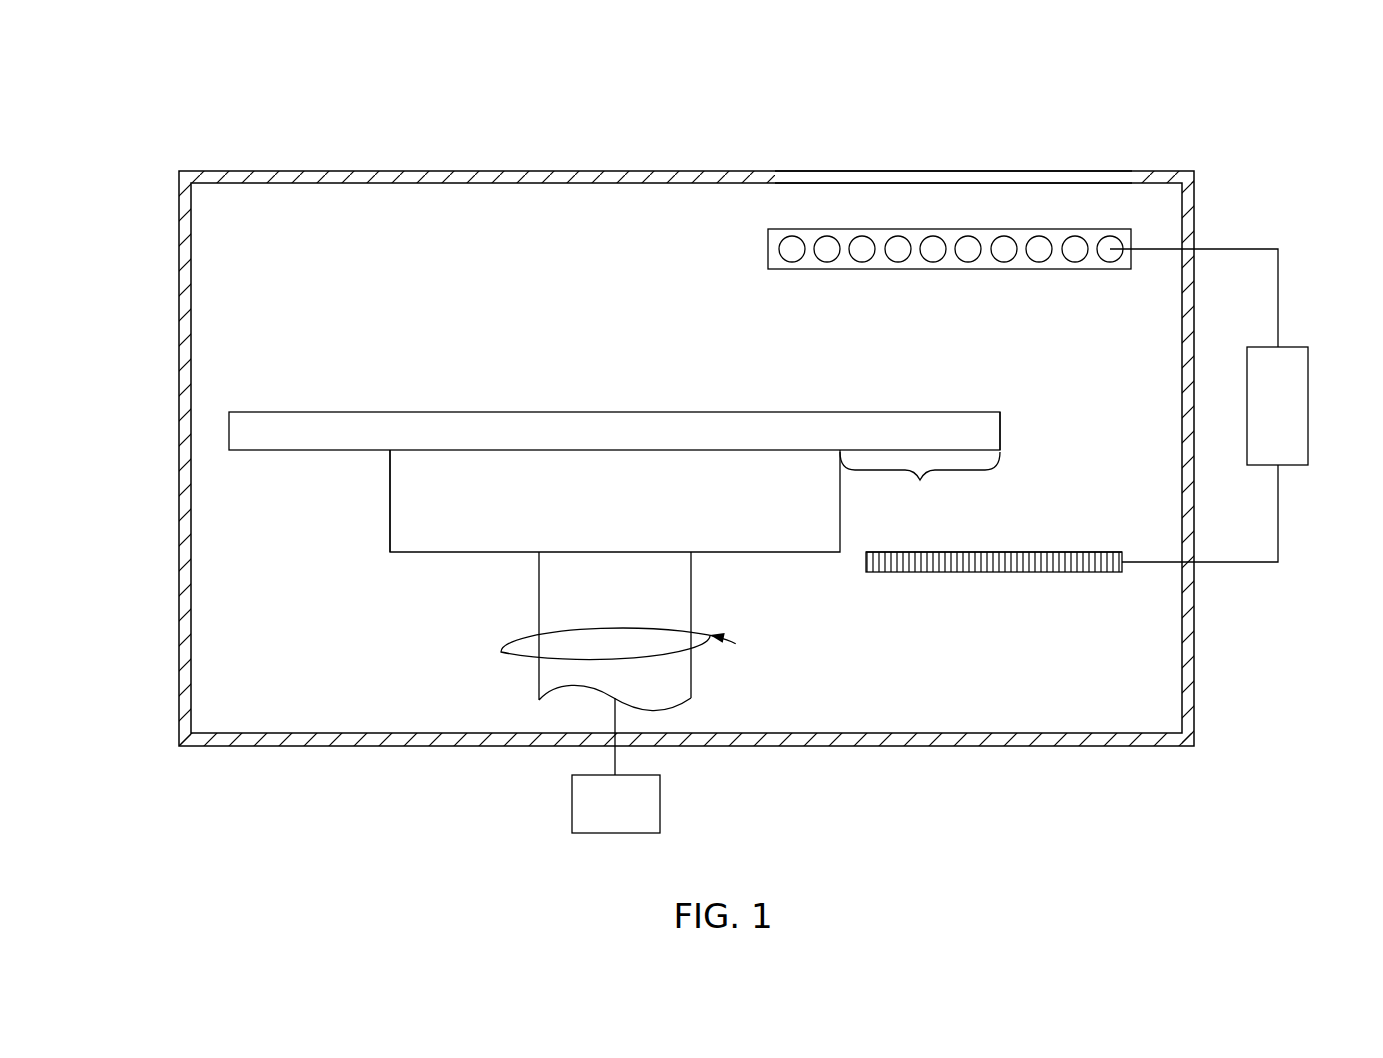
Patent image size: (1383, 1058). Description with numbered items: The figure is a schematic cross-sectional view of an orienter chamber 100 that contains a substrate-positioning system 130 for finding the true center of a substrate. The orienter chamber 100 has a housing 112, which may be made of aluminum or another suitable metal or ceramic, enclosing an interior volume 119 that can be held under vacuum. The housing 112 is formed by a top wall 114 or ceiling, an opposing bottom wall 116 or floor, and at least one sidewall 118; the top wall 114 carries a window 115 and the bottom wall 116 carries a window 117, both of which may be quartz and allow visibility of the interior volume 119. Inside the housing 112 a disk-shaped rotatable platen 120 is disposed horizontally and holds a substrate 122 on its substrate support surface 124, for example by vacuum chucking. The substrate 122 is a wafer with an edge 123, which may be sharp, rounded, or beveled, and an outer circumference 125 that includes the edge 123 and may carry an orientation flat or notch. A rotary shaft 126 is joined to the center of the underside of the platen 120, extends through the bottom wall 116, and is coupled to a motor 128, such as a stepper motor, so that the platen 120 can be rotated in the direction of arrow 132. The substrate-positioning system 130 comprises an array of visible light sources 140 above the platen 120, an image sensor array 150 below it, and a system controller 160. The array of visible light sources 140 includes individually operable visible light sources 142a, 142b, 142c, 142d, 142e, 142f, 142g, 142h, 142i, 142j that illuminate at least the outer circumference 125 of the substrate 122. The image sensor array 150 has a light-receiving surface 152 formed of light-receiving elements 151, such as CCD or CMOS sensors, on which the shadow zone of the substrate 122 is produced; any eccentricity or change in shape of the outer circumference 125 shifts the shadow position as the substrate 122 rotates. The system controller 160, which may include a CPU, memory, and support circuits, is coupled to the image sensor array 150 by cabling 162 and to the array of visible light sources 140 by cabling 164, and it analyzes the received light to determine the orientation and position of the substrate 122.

The orienter chamber 100 is at (171, 117).
The housing 112 is at (627, 462).
The top wall 114 is at (371, 171).
The window 115 is at (1092, 171).
The bottom wall 116 is at (415, 748).
The window 117 is at (972, 748).
The sidewall 118 is at (178, 580).
The interior volume 119 is at (240, 241).
The platen 120 is at (470, 553).
The substrate 122 is at (289, 412).
The edge 123 is at (1000, 430).
The substrate support surface 124 is at (413, 452).
The outer circumference 125 is at (920, 479).
The rotary shaft 126 is at (692, 600).
The motor 128 is at (597, 815).
The substrate-positioning system 130 is at (1235, 205).
The arrow 132 is at (507, 648).
The array of visible light sources 140 is at (788, 219).
The visible light source 142a is at (792, 262).
The visible light source 142b is at (827, 262).
The visible light source 142c is at (862, 236).
The visible light source 142d is at (898, 236).
The visible light source 142e is at (933, 262).
The visible light source 142f is at (968, 262).
The visible light source 142g is at (1004, 236).
The visible light source 142h is at (1039, 236).
The visible light source 142i is at (1075, 262).
The visible light source 142j is at (1110, 262).
The image sensor array 150 is at (966, 583).
The light-receiving elements 151 is at (1048, 572).
The light-receiving surface 152 is at (1018, 552).
The system controller 160 is at (1259, 410).
The cabling 162 is at (1232, 565).
The cabling 164 is at (1278, 283).